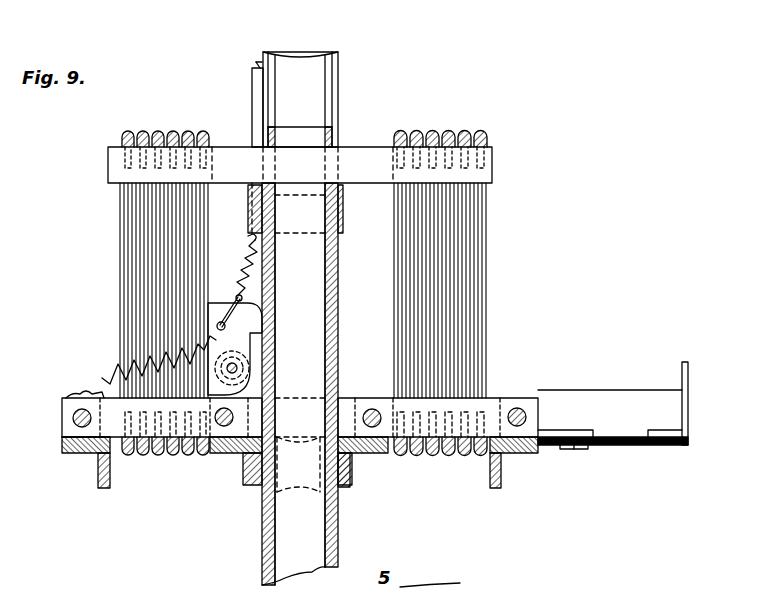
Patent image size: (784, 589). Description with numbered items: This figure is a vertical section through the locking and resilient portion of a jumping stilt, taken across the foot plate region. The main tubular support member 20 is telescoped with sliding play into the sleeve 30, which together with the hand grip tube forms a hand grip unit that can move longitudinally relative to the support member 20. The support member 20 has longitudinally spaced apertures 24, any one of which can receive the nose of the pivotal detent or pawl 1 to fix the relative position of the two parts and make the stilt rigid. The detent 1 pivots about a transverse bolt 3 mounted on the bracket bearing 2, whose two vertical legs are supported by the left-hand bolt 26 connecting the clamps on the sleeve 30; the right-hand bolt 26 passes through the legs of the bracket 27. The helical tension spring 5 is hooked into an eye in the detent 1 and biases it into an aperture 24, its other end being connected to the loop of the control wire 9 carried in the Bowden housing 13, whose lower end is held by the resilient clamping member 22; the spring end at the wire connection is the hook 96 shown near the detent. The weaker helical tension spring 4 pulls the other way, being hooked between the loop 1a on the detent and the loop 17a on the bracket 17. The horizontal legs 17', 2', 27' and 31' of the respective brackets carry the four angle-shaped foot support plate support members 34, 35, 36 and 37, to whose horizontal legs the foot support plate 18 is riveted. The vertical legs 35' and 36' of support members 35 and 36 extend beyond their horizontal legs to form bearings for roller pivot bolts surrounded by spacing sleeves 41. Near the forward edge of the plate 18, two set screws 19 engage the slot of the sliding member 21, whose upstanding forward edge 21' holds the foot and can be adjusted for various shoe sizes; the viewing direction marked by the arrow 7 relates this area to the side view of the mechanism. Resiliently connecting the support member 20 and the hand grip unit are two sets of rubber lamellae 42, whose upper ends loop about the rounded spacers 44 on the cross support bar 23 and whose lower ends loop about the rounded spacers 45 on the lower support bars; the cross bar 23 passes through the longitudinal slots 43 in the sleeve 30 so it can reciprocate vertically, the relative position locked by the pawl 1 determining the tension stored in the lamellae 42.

The pivotal detent 1 is at (262, 320).
The loop 1a is at (214, 310).
The bracket bearing 2 is at (229, 476).
The horizontally extending leg 2' is at (206, 496).
The transverse bolt 3 is at (233, 362).
The helical tension spring 4 is at (118, 367).
The helical tension spring 5 is at (242, 262).
The arrow 7 is at (82, 418).
The control wire 9 is at (258, 64).
The Bowden housing 13 is at (252, 108).
The bracket 17 is at (142, 417).
The horizontally extending leg 17' is at (75, 466).
The loop 17a is at (68, 396).
The foot support plate 18 is at (562, 430).
The set screws 19 is at (576, 452).
The tubular support member 20 is at (338, 540).
The sliding member 21 is at (613, 431).
The vertically extending forward edge 21' is at (706, 402).
The clamping member 22 is at (343, 210).
The cross support bar 23 is at (350, 147).
The apertures 24 is at (268, 560).
The bolts 26 is at (220, 425).
The bracket 27 is at (438, 394).
The horizontally extending leg 27' is at (393, 471).
The sleeve 30 is at (338, 85).
The horizontally extending leg 31' is at (518, 462).
The foot support plate support member 34 is at (62, 446).
The foot support plate support member 35 is at (217, 467).
The vertical leg 35' is at (249, 491).
The foot support plate support member 36 is at (384, 462).
The vertical leg 36' is at (359, 481).
The foot support plate support member 37 is at (528, 398).
The spacing sleeves 41 is at (335, 475).
The resilient elements 42 is at (120, 258).
The longitudinal slots 43 is at (326, 55).
The rounded spacers 44 is at (482, 132).
The rounded spacers 45 is at (464, 456).
The spring hook 96 is at (250, 240).